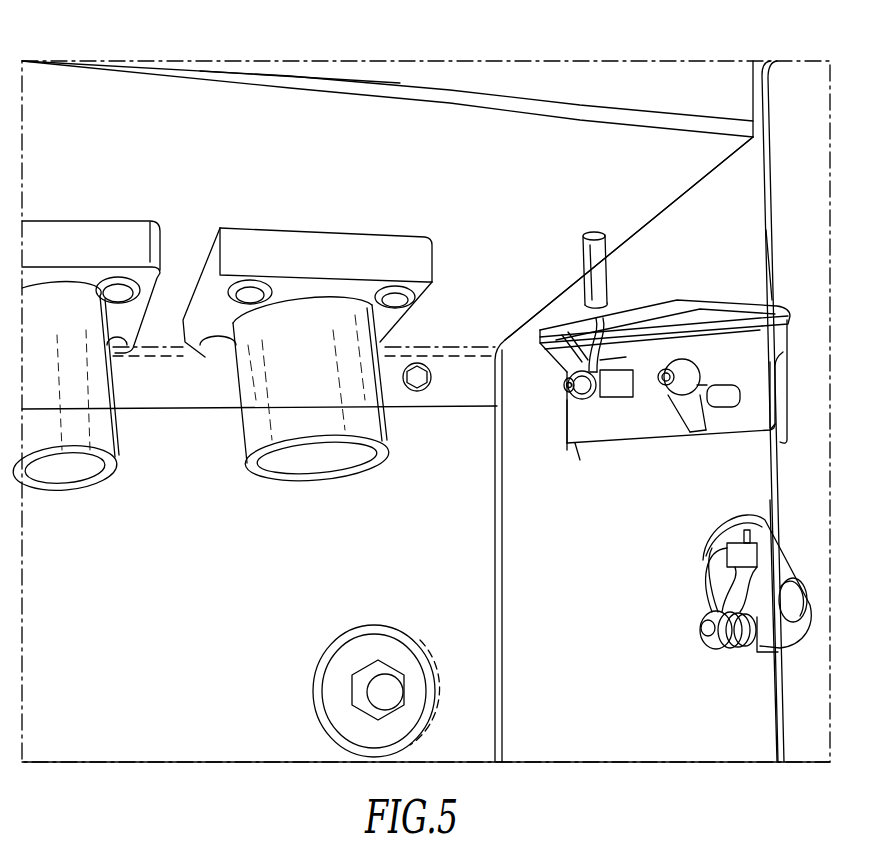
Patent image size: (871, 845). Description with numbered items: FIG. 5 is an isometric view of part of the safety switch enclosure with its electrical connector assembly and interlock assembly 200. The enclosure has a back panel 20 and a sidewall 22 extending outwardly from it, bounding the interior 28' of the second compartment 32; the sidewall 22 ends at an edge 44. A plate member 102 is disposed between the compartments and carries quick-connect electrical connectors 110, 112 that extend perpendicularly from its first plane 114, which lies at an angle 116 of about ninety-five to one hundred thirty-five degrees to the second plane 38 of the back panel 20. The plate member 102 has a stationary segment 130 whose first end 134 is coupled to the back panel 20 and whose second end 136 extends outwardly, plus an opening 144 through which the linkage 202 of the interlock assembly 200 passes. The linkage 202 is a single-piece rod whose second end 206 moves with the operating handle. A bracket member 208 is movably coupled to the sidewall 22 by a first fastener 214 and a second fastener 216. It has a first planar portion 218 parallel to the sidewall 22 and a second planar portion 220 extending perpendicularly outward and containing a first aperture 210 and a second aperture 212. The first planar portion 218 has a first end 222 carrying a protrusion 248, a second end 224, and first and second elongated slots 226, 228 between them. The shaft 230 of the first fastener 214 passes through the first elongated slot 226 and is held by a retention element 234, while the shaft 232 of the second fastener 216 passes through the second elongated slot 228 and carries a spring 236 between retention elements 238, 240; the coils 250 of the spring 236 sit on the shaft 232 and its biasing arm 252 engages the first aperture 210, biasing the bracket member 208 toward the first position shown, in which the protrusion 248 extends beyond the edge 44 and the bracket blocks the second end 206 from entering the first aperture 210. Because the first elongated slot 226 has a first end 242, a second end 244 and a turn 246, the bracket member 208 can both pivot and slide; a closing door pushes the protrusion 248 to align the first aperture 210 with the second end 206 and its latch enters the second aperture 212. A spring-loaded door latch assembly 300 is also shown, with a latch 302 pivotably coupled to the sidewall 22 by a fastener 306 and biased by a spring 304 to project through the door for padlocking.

The back panel 20 is at (252, 733).
The sidewall 22 is at (627, 745).
The frame cross member 28' is at (77, 736).
The second compartment 32 is at (187, 693).
The second plane 38 is at (168, 459).
The edge 44 is at (778, 497).
The plate member 102 is at (318, 104).
The three-phase connector 110 is at (100, 440).
The three-phase connector 112 is at (255, 440).
The first plane 114 is at (457, 193).
The angle 116 is at (499, 388).
The stationary segment 130 is at (372, 108).
The first end 134 is at (478, 418).
The second end 136 is at (748, 82).
The opening 144 is at (592, 237).
The interlock assembly 200 is at (658, 412).
The linkage 202 is at (600, 255).
The second end 206 is at (612, 288).
The bracket member 208 is at (668, 437).
The first aperture 210 is at (617, 343).
The second aperture 212 is at (705, 366).
The first fastener 214 is at (695, 320).
The second fastener 216 is at (575, 412).
The first planar portion 218 is at (597, 428).
The second planar portion 220 is at (712, 302).
The first end 222 is at (782, 296).
The second end 224 is at (573, 452).
The first elongated slot 226 is at (745, 431).
The second elongated slot 228 is at (628, 395).
The shaft 230 is at (695, 333).
The shaft 232 is at (530, 345).
The retention element 234 is at (680, 405).
The spring 236 is at (540, 343).
The retention element 238 is at (609, 322).
The retention element 240 is at (565, 398).
The first end 242 is at (770, 405).
The second end 244 is at (741, 382).
The turn 246 is at (700, 432).
The protrusion 248 is at (795, 320).
The coils 250 is at (578, 432).
The biasing arm 252 is at (578, 345).
The spring-loaded door latch assembly 300 is at (716, 630).
The latch 302 is at (785, 645).
The spring 304 is at (740, 650).
The fastener 306 is at (700, 618).